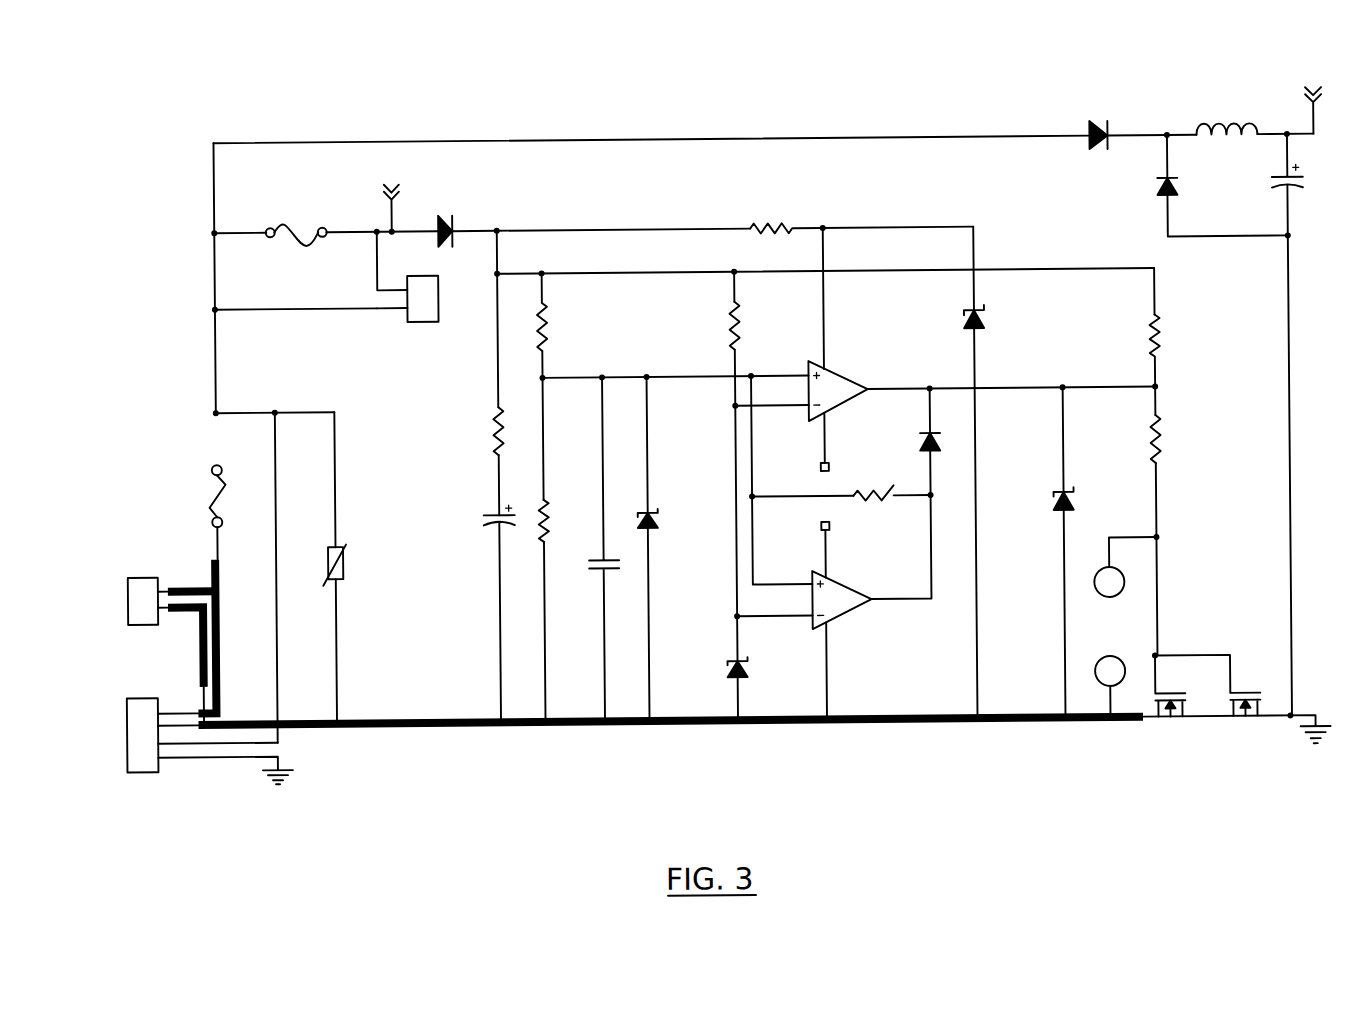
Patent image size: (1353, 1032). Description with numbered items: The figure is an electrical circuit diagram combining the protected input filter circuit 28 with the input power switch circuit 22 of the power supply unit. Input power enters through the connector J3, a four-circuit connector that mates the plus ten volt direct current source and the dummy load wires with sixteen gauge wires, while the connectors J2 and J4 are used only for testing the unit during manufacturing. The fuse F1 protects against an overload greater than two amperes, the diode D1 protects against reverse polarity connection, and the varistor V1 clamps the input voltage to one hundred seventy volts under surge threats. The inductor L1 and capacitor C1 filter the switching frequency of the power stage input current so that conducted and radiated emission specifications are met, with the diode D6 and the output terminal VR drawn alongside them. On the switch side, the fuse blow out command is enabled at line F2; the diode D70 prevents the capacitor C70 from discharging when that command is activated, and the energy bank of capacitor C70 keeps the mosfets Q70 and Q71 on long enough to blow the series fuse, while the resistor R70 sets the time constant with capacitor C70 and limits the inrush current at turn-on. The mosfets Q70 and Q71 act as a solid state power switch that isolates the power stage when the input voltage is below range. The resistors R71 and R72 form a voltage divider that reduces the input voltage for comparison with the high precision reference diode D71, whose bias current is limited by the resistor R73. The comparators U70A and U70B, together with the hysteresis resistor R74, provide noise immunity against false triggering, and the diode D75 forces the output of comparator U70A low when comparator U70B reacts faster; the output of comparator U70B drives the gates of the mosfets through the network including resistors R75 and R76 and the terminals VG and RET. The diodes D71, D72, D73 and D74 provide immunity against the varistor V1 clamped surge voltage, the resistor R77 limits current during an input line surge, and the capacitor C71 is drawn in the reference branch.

The input power switch circuit 22 is at (197, 246).
The protected input filter circuit 28 is at (1174, 118).
The FBO command line F2 is at (351, 217).
The connector J4 is at (407, 276).
The diode D70 is at (440, 207).
The diode D1 is at (1098, 121).
The inductor L1 is at (1255, 103).
The regulated output terminal VR is at (1312, 103).
The diode D6 is at (1196, 201).
The capacitor C1 is at (1263, 185).
The fuse F1 is at (272, 486).
The varistor V1 is at (351, 568).
The connector J2 is at (146, 588).
The connector J3 is at (200, 733).
The resistor R77 is at (734, 208).
The resistor R70 is at (478, 373).
The capacitor C70 is at (478, 611).
The resistor R71 is at (558, 325).
The resistor R72 is at (560, 550).
The capacitor C71 is at (589, 549).
The diode D73 is at (672, 548).
The resistor R73 is at (716, 444).
The voltage reference diode D71 is at (714, 668).
The hysteresis resistor R74 is at (841, 505).
The comparator U70B is at (840, 349).
The diode D75 is at (968, 441).
The diode D74 is at (1005, 315).
The comparator U70A is at (865, 607).
The diode D72 is at (1041, 552).
The resistor R75 is at (1172, 327).
The resistor R76 is at (1174, 520).
The gate voltage terminal VG is at (1125, 578).
The return terminal RET is at (1110, 679).
The mosfet Q71 is at (1170, 698).
The mosfet Q70 is at (1208, 699).